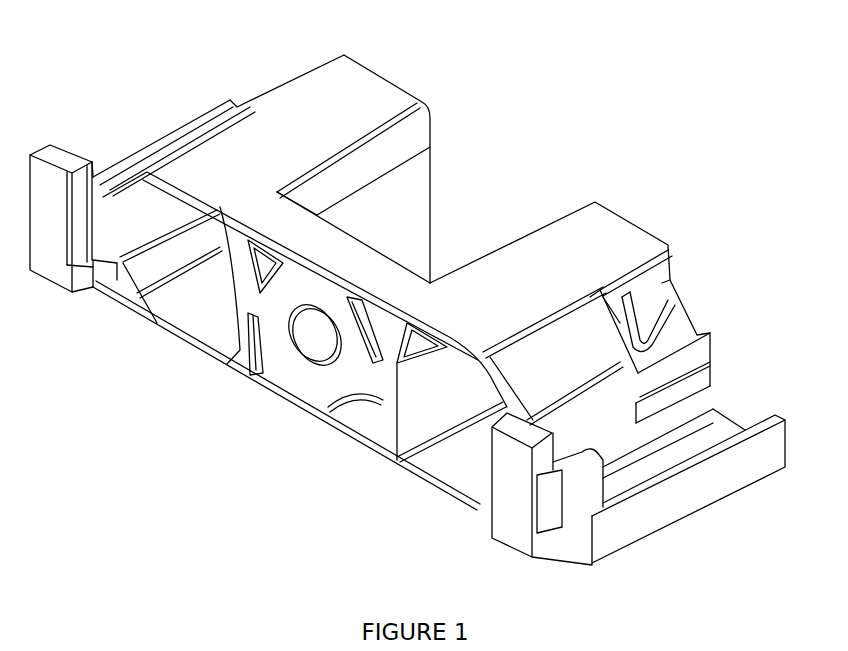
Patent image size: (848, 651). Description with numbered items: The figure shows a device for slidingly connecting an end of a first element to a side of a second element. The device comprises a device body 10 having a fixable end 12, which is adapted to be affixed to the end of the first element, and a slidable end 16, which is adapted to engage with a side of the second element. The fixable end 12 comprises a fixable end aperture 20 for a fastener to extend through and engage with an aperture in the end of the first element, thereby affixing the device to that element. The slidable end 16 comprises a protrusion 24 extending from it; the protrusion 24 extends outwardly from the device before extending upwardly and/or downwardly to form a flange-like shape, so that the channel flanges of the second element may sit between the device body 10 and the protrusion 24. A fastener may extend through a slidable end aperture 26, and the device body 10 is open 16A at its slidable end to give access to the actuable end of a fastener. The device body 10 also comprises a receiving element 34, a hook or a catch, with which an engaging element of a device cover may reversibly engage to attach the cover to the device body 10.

The device body 10 is at (297, 112).
The fixable end 12 is at (540, 176).
The slidable end 16 is at (165, 417).
The opening at slidable end 16A is at (213, 307).
The fixable end aperture 20 is at (637, 315).
The protrusion 24 is at (47, 268).
The slidable end aperture 26 is at (323, 345).
The receiving element 34 is at (688, 357).